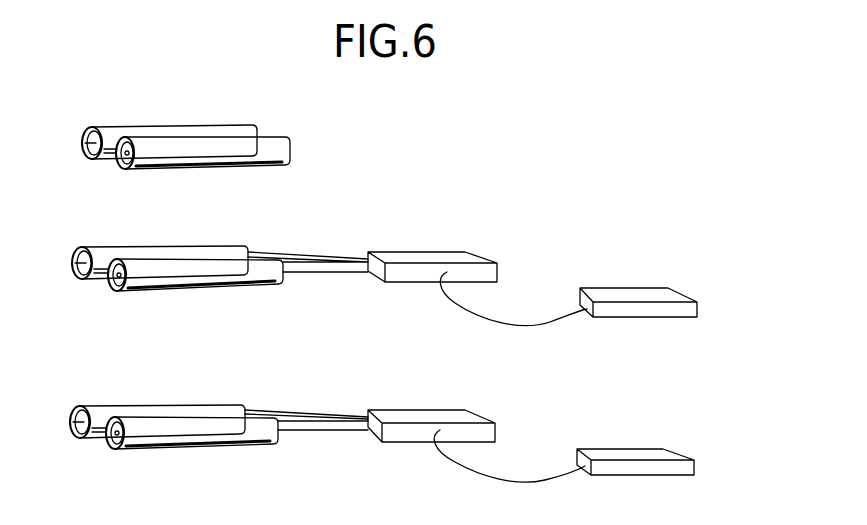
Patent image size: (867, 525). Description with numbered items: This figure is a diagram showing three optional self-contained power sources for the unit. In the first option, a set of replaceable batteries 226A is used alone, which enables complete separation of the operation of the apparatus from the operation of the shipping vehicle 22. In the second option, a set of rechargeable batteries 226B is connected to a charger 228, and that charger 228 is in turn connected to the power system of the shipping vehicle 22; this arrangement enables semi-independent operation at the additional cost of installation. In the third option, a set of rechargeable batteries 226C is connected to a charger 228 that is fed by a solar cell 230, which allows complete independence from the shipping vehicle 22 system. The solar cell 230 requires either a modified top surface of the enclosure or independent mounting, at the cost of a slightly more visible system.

The replaceable batteries 226A is at (198, 131).
The rechargeable batteries 226B is at (188, 252).
The rechargeable batteries 226C is at (170, 408).
The charger 228 is at (422, 258).
The shipping vehicle 22 is at (630, 297).
The solar cell 230 is at (652, 452).